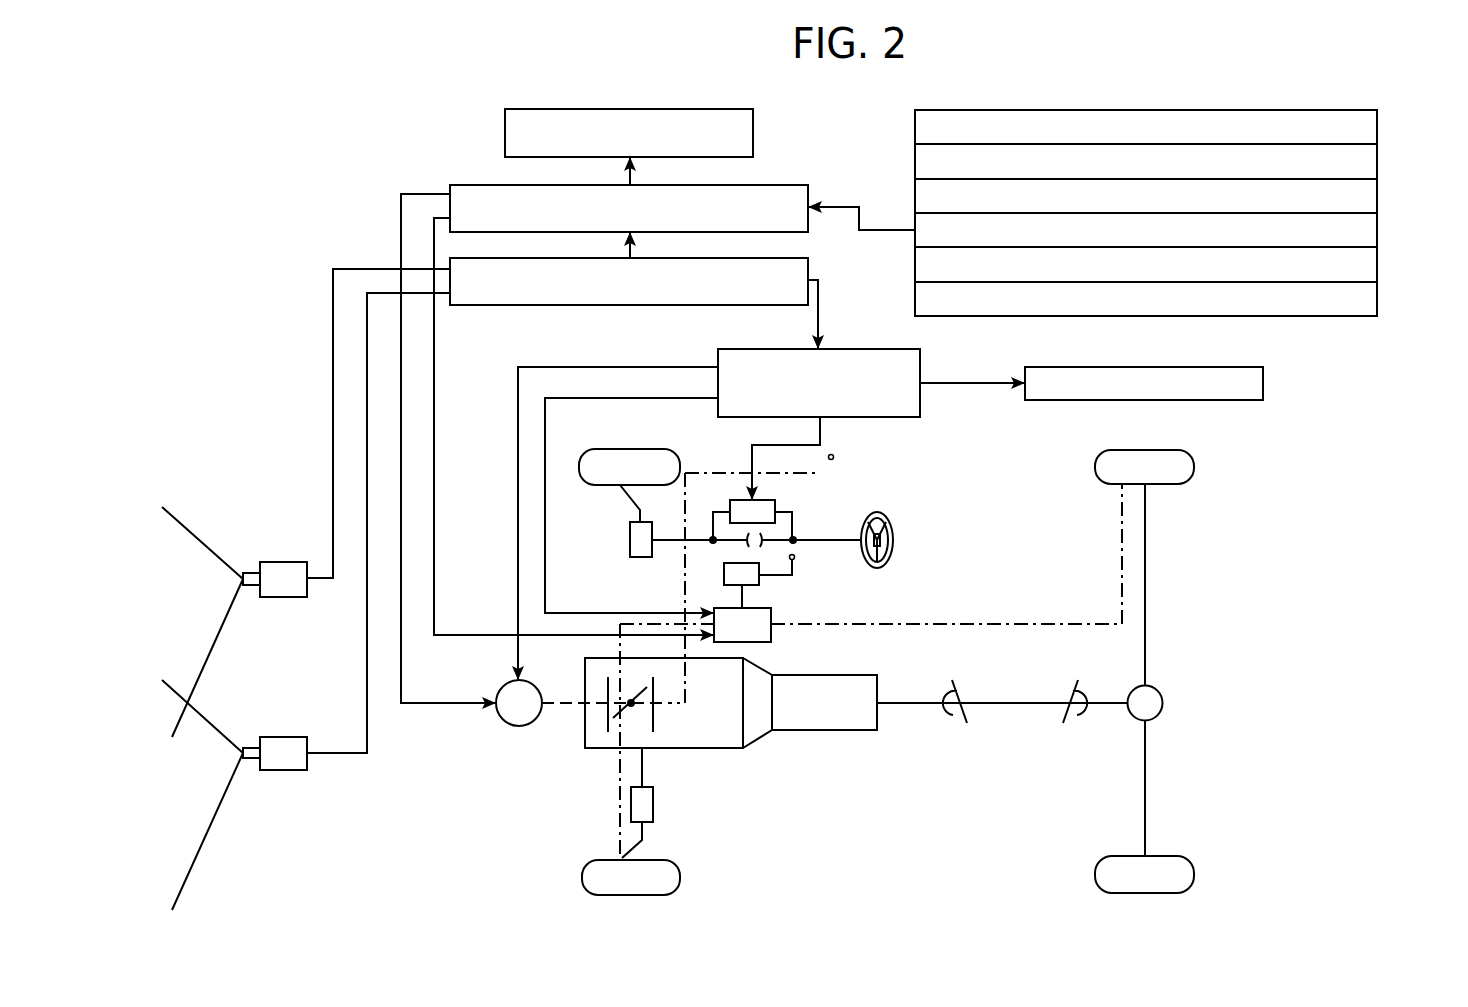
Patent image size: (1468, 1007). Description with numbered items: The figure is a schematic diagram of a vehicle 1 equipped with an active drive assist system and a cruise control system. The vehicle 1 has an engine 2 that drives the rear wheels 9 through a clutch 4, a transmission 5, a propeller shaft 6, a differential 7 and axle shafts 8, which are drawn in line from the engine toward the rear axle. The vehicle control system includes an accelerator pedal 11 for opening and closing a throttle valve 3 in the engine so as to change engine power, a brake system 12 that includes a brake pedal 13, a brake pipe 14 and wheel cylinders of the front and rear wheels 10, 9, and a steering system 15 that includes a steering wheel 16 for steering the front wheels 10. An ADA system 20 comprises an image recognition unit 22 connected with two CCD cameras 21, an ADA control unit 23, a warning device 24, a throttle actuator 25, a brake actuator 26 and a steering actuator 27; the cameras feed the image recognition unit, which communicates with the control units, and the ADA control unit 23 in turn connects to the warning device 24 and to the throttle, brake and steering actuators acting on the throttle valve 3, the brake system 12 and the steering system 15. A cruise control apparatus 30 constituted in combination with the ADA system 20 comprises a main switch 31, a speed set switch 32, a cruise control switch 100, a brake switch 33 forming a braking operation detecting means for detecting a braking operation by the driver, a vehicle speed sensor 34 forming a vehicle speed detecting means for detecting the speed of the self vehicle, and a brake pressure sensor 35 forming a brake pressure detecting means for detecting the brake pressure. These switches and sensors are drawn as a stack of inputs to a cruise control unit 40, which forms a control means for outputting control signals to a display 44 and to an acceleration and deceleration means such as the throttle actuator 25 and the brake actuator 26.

The vehicle 1 is at (906, 806).
The engine 2 is at (717, 748).
The throttle valve 3 is at (623, 714).
The clutch 4 is at (752, 737).
The transmission 5 is at (850, 730).
The propeller shaft 6 is at (1021, 704).
The differential 7 is at (1163, 703).
The axle shafts 8 is at (1145, 790).
The rear wheels 9 is at (1194, 875).
The front wheels 10 is at (680, 877).
The accelerator pedal 11 is at (831, 460).
The brake system 12 is at (1045, 601).
The brake pedal 13 is at (794, 562).
The brake pipe 14 is at (992, 625).
The steering system 15 is at (906, 554).
The steering wheel 16 is at (888, 521).
The ADA system 20 is at (294, 454).
The CCD cameras 21 is at (282, 597).
The image recognition unit 22 is at (603, 305).
The ADA control unit 23 is at (847, 349).
The warning device 24 is at (1263, 383).
The throttle actuator 25 is at (519, 726).
The brake actuator 26 is at (771, 637).
The steering actuator 27 is at (775, 500).
The cruise control apparatus 30 is at (389, 209).
The main switch 31 is at (1377, 127).
The speed set switch 32 is at (1377, 162).
The brake switch 33 is at (1377, 230).
The vehicle speed sensor 34 is at (1377, 265).
The brake pressure sensor 35 is at (1377, 299).
The cruise control unit 40 is at (783, 185).
The display 44 is at (697, 109).
The cruise control switch 100 is at (1377, 196).